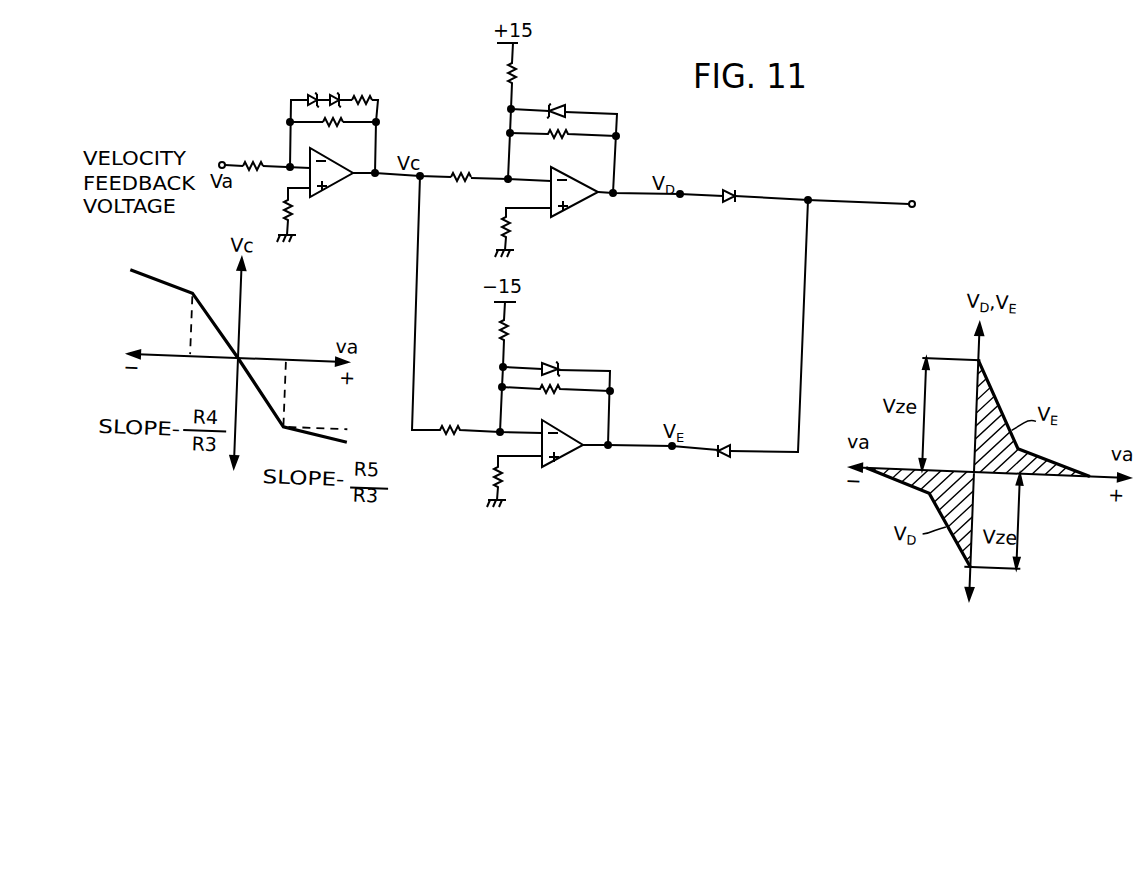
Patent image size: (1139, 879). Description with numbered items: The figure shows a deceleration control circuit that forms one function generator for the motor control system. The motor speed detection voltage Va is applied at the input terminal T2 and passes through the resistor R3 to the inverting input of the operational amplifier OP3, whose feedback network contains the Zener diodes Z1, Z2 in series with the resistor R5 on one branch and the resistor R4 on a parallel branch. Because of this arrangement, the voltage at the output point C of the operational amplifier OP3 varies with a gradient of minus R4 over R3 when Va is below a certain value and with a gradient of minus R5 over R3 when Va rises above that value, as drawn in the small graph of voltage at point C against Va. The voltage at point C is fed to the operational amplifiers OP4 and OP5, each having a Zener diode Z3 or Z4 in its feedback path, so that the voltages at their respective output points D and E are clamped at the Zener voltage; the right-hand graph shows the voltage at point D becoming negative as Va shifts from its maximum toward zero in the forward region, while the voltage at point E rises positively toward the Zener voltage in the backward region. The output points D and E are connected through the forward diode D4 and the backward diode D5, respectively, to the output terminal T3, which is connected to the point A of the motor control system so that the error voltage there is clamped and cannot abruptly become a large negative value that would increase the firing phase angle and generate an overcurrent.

The input terminal T2 is at (222, 162).
The resistor R3 is at (255, 154).
The Zener diode Z1 is at (311, 99).
The Zener diode Z2 is at (336, 100).
The resistor R5 is at (373, 93).
The resistor R4 is at (335, 133).
The operational amplifier OP3 is at (346, 187).
The Zener diode Z3 is at (557, 110).
The operational amplifier OP4 is at (589, 202).
The forward diode D4 is at (735, 184).
The output terminal T3 is at (914, 201).
The Zener diode Z4 is at (552, 370).
The operational amplifier OP5 is at (581, 457).
The backward diode D5 is at (726, 438).
The output point C is at (421, 174).
The output point D is at (680, 193).
The output point E is at (672, 447).
The point A is at (839, 188).